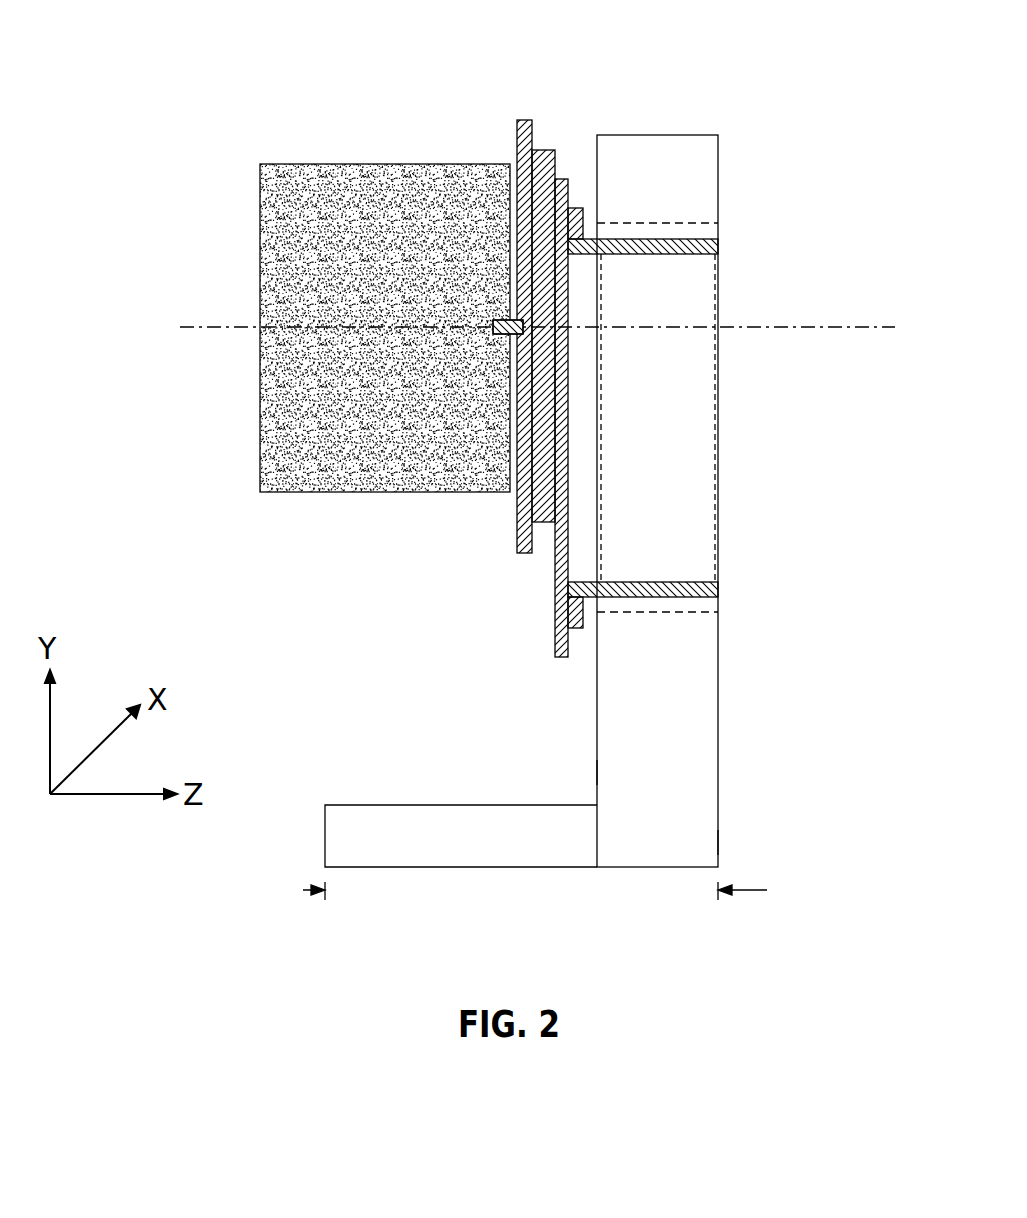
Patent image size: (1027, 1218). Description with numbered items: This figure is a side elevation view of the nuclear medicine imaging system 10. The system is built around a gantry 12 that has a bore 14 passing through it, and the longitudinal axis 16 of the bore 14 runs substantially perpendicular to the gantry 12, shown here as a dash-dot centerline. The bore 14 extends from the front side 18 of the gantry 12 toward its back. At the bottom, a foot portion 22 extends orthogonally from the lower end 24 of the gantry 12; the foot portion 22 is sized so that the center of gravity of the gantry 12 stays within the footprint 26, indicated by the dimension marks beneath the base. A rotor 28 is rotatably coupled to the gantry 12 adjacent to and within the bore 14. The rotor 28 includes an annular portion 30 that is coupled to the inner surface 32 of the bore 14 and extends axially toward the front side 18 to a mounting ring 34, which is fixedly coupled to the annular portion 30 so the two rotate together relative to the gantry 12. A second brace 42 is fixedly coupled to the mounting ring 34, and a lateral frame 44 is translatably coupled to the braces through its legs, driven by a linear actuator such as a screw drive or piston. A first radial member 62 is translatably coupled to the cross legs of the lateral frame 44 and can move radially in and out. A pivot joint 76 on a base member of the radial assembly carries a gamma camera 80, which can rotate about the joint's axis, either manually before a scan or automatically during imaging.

The nuclear medicine imaging system 10 is at (249, 48).
The gantry 12 is at (676, 729).
The bore 14 is at (745, 305).
The longitudinal axis 16 is at (870, 327).
The front side 18 is at (597, 772).
The foot portion 22 is at (478, 852).
The lower end 24 is at (703, 840).
The footprint 26 is at (744, 890).
The rotor 28 is at (578, 150).
The annular portion 30 is at (718, 248).
The inner surface 32 is at (640, 222).
The mounting ring 34 is at (575, 628).
The second brace 42 is at (558, 657).
The lateral frame 44 is at (548, 150).
The first radial member 62 is at (522, 553).
The pivot joint 76 is at (495, 333).
The gamma camera 80 is at (410, 180).